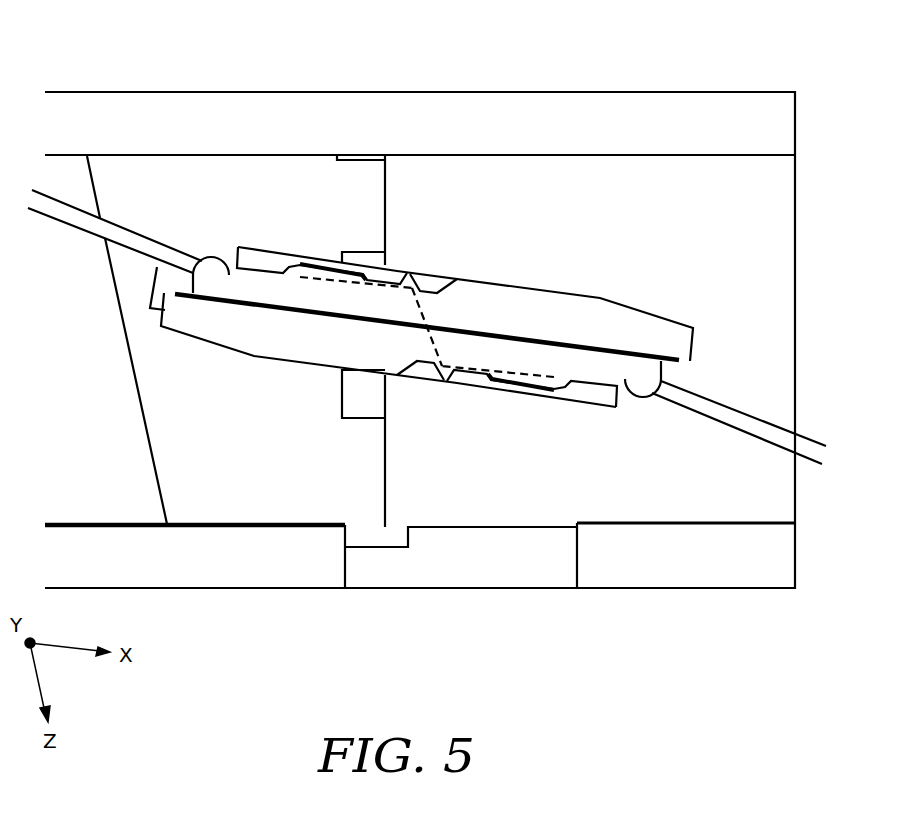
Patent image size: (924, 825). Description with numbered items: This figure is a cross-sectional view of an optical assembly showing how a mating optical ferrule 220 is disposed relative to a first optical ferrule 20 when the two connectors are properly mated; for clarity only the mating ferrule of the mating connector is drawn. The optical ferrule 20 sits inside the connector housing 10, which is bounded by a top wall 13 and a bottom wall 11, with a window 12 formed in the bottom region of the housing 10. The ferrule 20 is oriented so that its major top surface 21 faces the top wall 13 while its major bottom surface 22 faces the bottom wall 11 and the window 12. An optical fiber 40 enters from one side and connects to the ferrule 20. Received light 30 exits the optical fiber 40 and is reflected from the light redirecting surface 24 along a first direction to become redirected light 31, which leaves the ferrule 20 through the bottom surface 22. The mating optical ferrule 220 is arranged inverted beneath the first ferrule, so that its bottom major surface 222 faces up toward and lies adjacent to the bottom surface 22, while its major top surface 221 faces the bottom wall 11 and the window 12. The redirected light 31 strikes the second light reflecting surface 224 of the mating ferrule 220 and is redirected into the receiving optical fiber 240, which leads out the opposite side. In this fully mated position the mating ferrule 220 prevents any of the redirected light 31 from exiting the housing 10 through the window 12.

The connector housing 10 is at (147, 90).
The bottom wall 11 is at (242, 575).
The window 12 is at (517, 572).
The top wall 13 is at (578, 125).
The optical ferrule 20 is at (498, 302).
The major top surface 21 is at (623, 297).
The major bottom surface 22 is at (673, 363).
The light redirecting surface 24 is at (428, 283).
The received light 30 is at (399, 283).
The redirected light 31 is at (432, 352).
The optical fiber 40 is at (157, 237).
The mating optical ferrule 220 is at (326, 359).
The major top surface 221 is at (284, 358).
The bottom major surface 222 is at (175, 292).
The light reflecting surface 224 is at (433, 377).
The optical fiber 240 is at (698, 415).